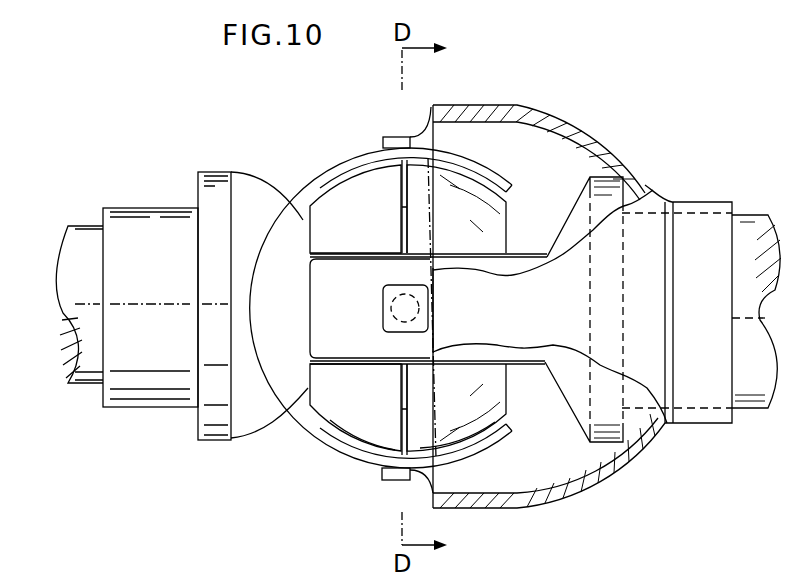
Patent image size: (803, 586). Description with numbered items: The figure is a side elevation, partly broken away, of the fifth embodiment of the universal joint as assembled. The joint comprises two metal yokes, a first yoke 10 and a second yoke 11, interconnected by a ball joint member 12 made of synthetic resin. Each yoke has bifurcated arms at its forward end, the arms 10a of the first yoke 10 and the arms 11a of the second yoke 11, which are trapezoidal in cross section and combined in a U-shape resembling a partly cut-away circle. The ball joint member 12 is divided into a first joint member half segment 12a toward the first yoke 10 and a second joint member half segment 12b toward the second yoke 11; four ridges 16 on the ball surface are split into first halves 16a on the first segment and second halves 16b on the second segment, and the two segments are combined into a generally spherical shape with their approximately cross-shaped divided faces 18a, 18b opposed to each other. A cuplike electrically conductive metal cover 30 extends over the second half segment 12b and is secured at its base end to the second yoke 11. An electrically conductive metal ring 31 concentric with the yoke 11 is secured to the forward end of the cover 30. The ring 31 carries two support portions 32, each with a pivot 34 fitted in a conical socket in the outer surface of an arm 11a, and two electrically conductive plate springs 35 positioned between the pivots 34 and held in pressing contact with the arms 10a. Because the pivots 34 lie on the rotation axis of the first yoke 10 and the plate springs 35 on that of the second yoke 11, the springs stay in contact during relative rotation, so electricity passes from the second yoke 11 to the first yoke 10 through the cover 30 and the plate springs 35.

The first yoke 10 is at (88, 383).
The arms of first yoke 10a is at (355, 153).
The second yoke 11 is at (744, 412).
The arms of second yoke 11a is at (536, 257).
The ball joint member 12 is at (318, 196).
The first joint member half segment 12a is at (366, 450).
The second joint member half segment 12b is at (491, 430).
The ridges 16 is at (303, 220).
The first halves of ridges 16a is at (337, 182).
The second halves of ridges 16b is at (477, 198).
The divided face of first half segment 18a is at (407, 432).
The divided face of second half segment 18b is at (400, 186).
The cover 30 is at (603, 476).
The ring 31 is at (436, 106).
The support portions 32 is at (382, 292).
The pivots 34 is at (392, 312).
The plate springs 35 is at (407, 137).